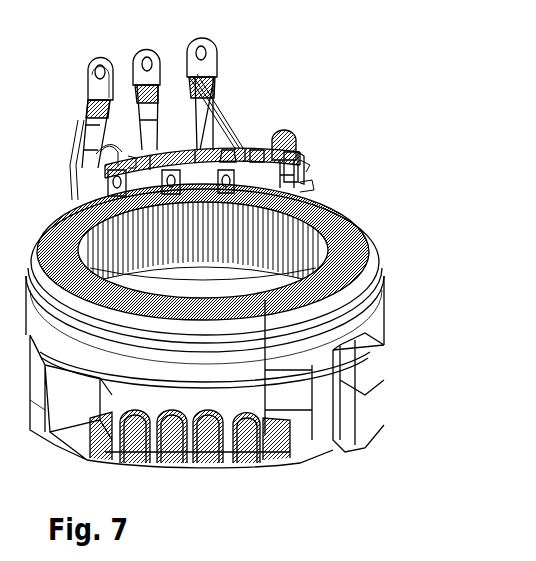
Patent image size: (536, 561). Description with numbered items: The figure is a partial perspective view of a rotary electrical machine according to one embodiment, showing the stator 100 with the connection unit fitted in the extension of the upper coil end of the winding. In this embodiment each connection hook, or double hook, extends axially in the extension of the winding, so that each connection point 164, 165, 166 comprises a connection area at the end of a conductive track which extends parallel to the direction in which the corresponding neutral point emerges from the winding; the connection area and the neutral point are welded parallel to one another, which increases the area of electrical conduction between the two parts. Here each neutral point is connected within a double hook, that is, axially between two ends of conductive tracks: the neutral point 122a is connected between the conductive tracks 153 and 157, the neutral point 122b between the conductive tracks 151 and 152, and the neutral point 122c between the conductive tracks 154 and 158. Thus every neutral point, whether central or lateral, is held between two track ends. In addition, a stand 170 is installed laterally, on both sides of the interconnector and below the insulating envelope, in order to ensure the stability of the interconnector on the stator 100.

The stator 100 is at (403, 248).
The neutral point 122a is at (108, 138).
The neutral point 122b is at (205, 148).
The neutral point 122c is at (300, 150).
The conductive track 151 is at (187, 150).
The conductive track 152 is at (212, 142).
The conductive track 153 is at (142, 148).
The conductive track 154 is at (262, 155).
The conductive track 157 is at (107, 150).
The conductive track 158 is at (290, 150).
The connection point 164 is at (304, 157).
The connection point 165 is at (228, 150).
The connection point 166 is at (130, 155).
The stand 170 is at (311, 178).